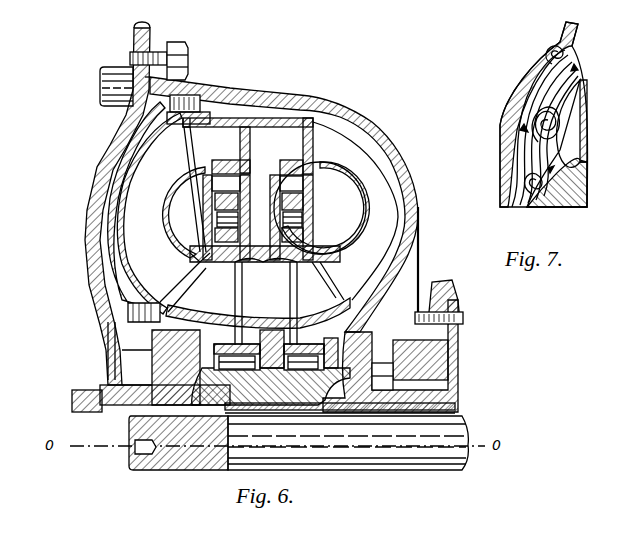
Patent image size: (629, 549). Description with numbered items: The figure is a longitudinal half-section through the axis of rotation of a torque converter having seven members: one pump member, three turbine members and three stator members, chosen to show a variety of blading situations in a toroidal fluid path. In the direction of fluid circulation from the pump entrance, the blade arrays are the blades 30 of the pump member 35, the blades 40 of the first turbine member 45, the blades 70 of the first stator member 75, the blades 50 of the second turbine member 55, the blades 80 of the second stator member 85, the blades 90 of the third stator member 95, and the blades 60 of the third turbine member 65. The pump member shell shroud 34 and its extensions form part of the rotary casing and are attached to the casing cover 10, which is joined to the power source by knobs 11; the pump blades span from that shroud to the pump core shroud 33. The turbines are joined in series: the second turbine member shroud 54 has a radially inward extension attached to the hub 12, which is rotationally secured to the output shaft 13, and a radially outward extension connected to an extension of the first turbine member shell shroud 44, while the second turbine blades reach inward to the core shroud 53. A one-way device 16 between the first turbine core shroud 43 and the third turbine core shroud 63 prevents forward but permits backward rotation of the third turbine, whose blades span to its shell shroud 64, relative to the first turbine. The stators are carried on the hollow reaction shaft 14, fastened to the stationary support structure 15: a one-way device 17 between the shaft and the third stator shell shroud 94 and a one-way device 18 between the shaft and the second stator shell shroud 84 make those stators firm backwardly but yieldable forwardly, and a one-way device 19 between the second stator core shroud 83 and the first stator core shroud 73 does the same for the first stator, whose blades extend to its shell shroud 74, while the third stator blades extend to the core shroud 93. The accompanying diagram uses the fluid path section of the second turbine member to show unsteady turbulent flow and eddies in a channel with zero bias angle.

The casing cover 10 is at (98, 183).
The knobs 11 is at (108, 88).
The hub 12 is at (160, 342).
The torque converter output shaft 13 is at (283, 425).
The hollow reaction shaft 14 is at (354, 414).
The stationary support structure 15 is at (446, 288).
The one-way device 16 is at (300, 222).
The one-way device 17 is at (271, 386).
The one-way device 18 is at (237, 388).
The one-way device 19 is at (216, 222).
The pump member blades 30 is at (368, 213).
The pump member core shroud 33 is at (362, 240).
The pump member shell shroud 34 is at (402, 188).
The pump member 35 is at (444, 208).
The first turbine member blades 40 is at (293, 151).
The first turbine member core shroud 43 is at (302, 150).
The first turbine member shell shroud 44 is at (304, 146).
The first turbine member 45 is at (273, 130).
The second turbine member blades 50 is at (122, 208).
The second turbine member core shroud 53 is at (162, 236).
The second turbine member shell shroud 54 is at (132, 184).
The second turbine member 55 is at (92, 206).
The third turbine member blades 60 is at (308, 290).
The third turbine member core shroud 63 is at (322, 266).
The third turbine member shell shroud 64 is at (330, 318).
The third turbine member 65 is at (333, 262).
The first stator member blades 70 is at (199, 185).
The first stator member core shroud 73 is at (231, 160).
The first stator member shell shroud 74 is at (235, 150).
The first stator member 75 is at (217, 128).
The second stator member blades 80 is at (214, 297).
The second stator member core shroud 83 is at (265, 264).
The second stator member shell shroud 84 is at (228, 314).
The second stator member 85 is at (197, 273).
The third stator member blades 90 is at (252, 289).
The third stator member core shroud 93 is at (245, 280).
The third stator member shell shroud 94 is at (264, 317).
The third stator member 95 is at (270, 262).